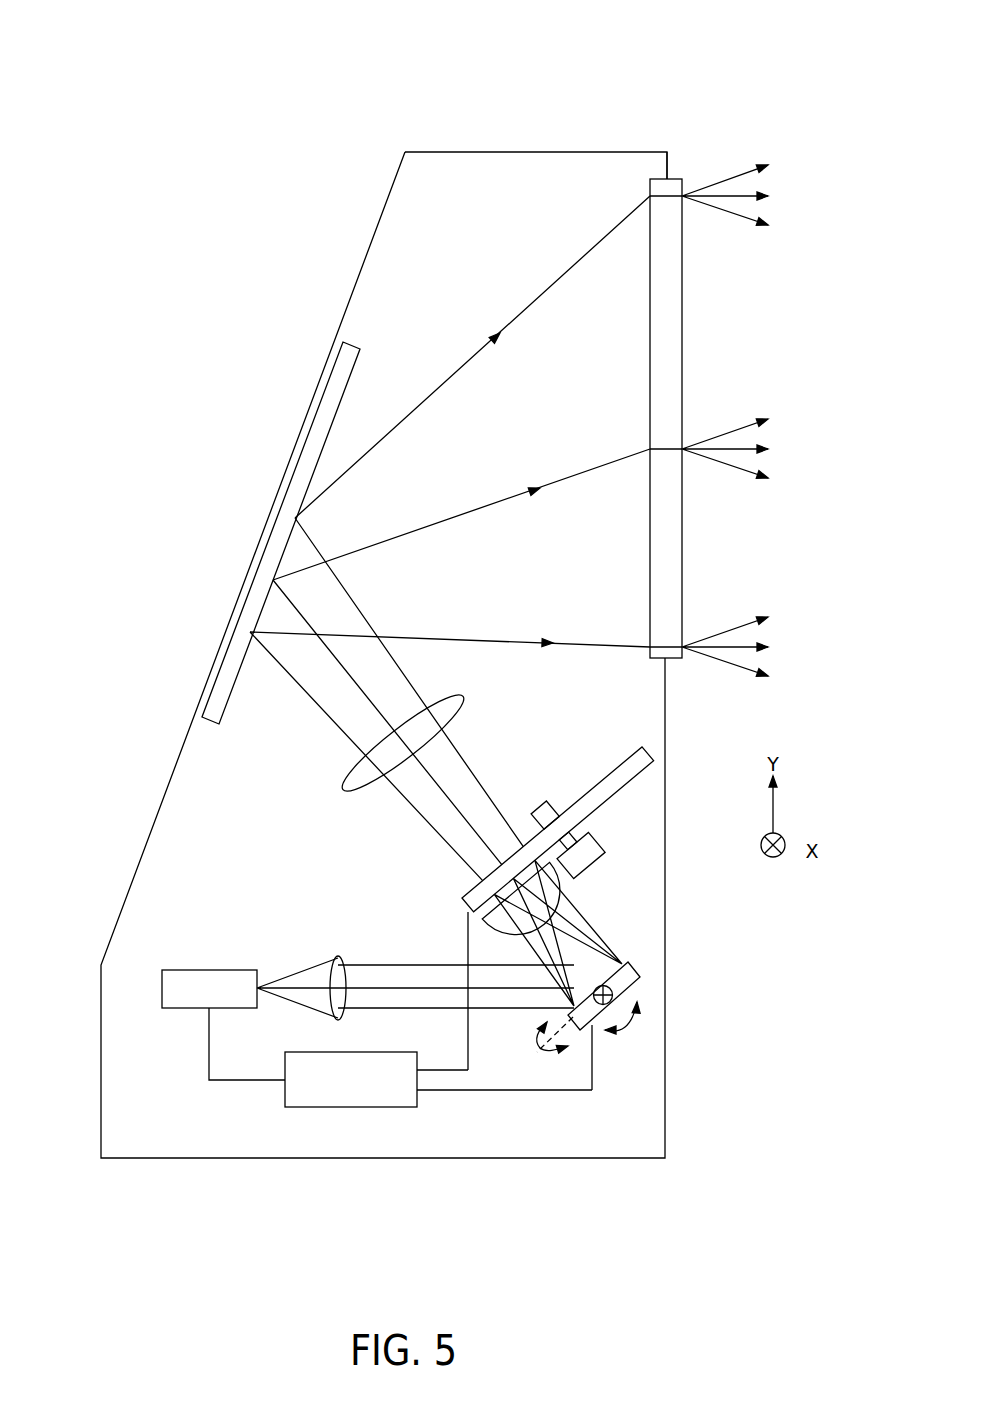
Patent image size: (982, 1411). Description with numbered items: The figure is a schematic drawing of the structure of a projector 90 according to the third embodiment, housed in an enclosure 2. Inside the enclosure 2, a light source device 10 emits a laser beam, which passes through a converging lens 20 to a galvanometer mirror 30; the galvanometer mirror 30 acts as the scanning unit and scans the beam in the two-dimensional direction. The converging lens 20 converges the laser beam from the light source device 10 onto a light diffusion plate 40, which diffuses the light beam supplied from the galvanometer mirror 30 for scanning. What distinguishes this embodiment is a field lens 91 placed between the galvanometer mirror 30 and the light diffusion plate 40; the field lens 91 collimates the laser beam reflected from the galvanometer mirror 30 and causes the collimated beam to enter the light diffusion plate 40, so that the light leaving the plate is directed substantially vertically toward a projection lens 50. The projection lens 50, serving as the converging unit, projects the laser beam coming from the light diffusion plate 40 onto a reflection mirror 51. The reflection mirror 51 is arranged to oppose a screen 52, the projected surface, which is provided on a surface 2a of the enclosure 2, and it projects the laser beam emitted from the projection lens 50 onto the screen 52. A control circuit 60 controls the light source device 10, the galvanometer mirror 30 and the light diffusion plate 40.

The enclosure 2 is at (380, 213).
The surface of the enclosure 2a is at (667, 172).
The light source device 10 is at (162, 990).
The converging lens 20 is at (340, 958).
The galvanometer mirror 30 is at (640, 975).
The light diffusion plate 40 is at (648, 753).
The projection lens 50 is at (461, 699).
The reflection mirror 51 is at (216, 720).
The screen 52 is at (683, 318).
The control circuit 60 is at (348, 1107).
The projector 90 is at (731, 93).
The field lens 91 is at (558, 882).